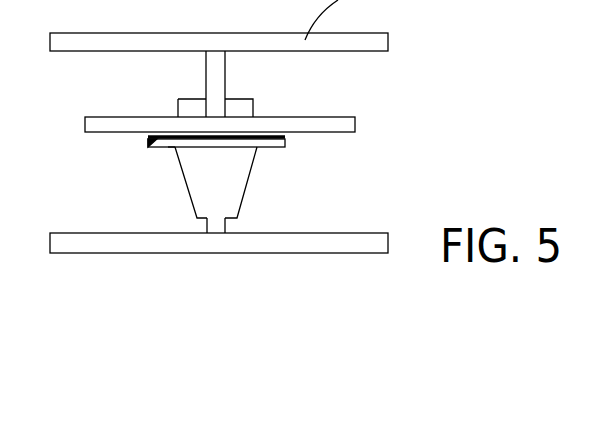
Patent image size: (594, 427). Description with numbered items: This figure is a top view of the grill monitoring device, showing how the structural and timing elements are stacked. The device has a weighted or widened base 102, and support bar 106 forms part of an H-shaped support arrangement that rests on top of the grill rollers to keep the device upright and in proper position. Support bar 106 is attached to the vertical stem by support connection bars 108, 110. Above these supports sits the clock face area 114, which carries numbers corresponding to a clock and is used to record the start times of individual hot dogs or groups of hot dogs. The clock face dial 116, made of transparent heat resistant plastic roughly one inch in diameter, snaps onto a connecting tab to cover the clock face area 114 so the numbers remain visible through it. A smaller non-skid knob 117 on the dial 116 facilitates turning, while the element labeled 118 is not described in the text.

The base 102 is at (250, 106).
The support bar 106 is at (355, 242).
The support connection bar 108 is at (217, 76).
The support connection bar 110 is at (222, 225).
The clock face area 114 is at (150, 143).
The clock face dial 116 is at (168, 147).
The knob 117 is at (237, 187).
The thin plate 118 is at (343, 128).